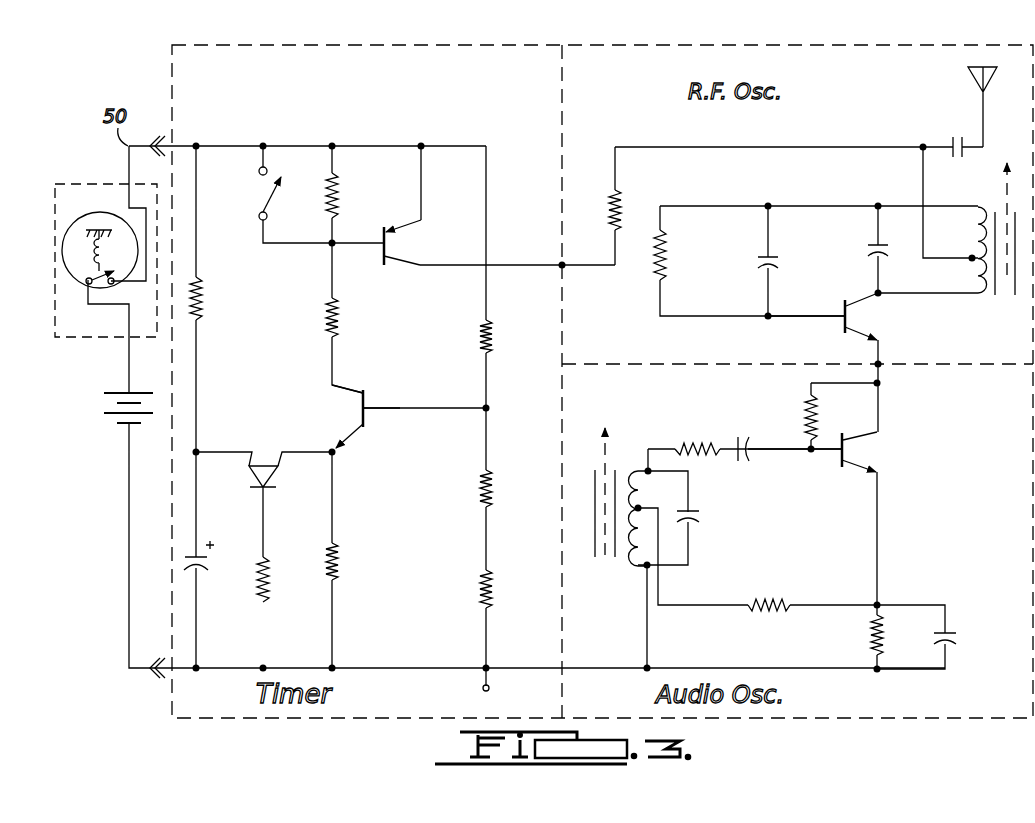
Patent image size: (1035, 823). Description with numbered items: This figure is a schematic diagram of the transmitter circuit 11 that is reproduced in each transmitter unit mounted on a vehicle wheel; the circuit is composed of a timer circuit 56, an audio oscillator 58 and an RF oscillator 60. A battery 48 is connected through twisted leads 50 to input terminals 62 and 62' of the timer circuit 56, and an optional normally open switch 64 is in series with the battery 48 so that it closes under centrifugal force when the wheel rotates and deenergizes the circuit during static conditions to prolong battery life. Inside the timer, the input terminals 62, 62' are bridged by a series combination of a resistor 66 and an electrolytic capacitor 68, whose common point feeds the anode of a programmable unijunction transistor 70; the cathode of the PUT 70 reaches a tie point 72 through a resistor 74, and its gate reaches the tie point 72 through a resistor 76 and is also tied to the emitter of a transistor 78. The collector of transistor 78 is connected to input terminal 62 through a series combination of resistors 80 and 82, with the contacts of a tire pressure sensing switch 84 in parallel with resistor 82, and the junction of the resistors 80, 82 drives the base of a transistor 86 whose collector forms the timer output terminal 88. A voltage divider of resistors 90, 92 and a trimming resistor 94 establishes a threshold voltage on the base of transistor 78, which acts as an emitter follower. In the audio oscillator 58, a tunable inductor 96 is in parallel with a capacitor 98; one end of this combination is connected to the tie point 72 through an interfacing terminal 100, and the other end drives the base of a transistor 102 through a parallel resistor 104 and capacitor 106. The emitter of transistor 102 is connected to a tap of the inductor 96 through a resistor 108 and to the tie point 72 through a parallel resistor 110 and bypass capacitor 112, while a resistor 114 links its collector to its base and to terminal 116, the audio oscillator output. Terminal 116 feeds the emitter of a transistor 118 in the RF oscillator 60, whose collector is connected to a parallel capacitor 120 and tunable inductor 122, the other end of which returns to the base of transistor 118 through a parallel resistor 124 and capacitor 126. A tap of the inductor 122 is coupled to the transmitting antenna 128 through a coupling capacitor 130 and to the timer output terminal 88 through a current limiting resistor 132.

The circuit 11 is at (158, 72).
The battery 48 is at (125, 392).
The twisted leads 50 is at (129, 522).
The timer circuit 56 is at (492, 107).
The audio oscillator 58 is at (980, 529).
The RF oscillator 60 is at (917, 74).
The input terminal 62 is at (145, 120).
The input terminal 62' is at (135, 687).
The normally open switch 64 is at (78, 178).
The resistor 66 is at (204, 298).
The electrolytic capacitor 68 is at (208, 572).
The programmable unijunction transistor 70 is at (280, 470).
The tie point 72 is at (485, 690).
The resistor 74 is at (270, 596).
The resistor 76 is at (340, 574).
The transistor 78 is at (366, 427).
The resistor 80 is at (340, 330).
The resistor 82 is at (338, 200).
The tire pressure sensing switch 84 is at (272, 200).
The transistor 86 is at (382, 262).
The timer circuit output terminal 88 is at (560, 268).
The resistor 90 is at (480, 336).
The resistor 92 is at (480, 500).
The trimming resistor 94 is at (480, 592).
The tunable inductor 96 is at (628, 580).
The capacitor 98 is at (700, 518).
The interfacing terminal 100 is at (565, 666).
The transistor 102 is at (838, 468).
The resistor 104 is at (690, 440).
The capacitor 106 is at (749, 438).
The resistor 108 is at (775, 600).
The resistor 110 is at (871, 635).
The bypass capacitor 112 is at (958, 637).
The resistor 114 is at (820, 416).
The terminal 116 is at (880, 367).
The transistor 118 is at (840, 320).
The capacitor 120 is at (868, 249).
The tunable inductor 122 is at (985, 298).
The resistor 124 is at (668, 254).
The capacitor 126 is at (760, 263).
The transmitting antenna 128 is at (967, 80).
The coupling capacitor 130 is at (955, 136).
The current limiting resistor 132 is at (618, 198).